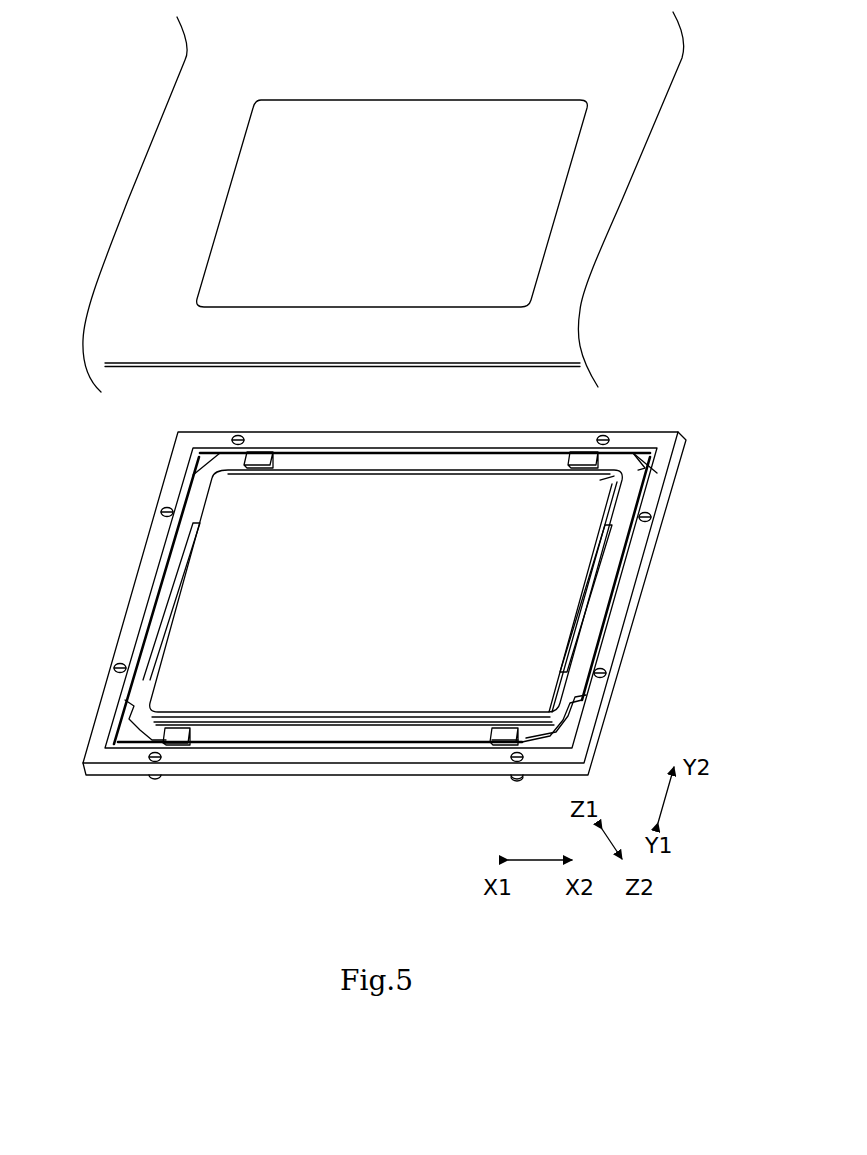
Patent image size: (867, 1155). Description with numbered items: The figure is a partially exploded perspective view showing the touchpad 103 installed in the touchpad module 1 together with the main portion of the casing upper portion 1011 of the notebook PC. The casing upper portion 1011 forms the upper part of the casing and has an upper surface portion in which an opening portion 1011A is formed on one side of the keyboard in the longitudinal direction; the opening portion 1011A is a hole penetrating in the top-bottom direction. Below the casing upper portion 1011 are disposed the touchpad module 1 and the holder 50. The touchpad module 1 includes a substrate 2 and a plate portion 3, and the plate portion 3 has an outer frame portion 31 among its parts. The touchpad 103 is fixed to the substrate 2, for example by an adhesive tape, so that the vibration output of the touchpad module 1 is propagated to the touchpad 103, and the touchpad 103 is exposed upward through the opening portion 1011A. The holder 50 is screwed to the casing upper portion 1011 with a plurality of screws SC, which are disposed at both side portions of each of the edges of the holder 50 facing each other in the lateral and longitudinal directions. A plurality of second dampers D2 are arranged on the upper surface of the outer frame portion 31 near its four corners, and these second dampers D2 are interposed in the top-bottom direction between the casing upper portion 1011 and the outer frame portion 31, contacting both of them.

The touchpad module 1 is at (568, 678).
The substrate 2 is at (615, 507).
The plate portion 3 is at (560, 730).
The outer frame portion 31 is at (638, 463).
The holder 50 is at (683, 462).
The touchpad 103 is at (595, 488).
The casing upper portion 1011 is at (547, 332).
The opening portion 1011A is at (283, 98).
The second dampers D2 is at (497, 740).
The screws SC is at (517, 773).